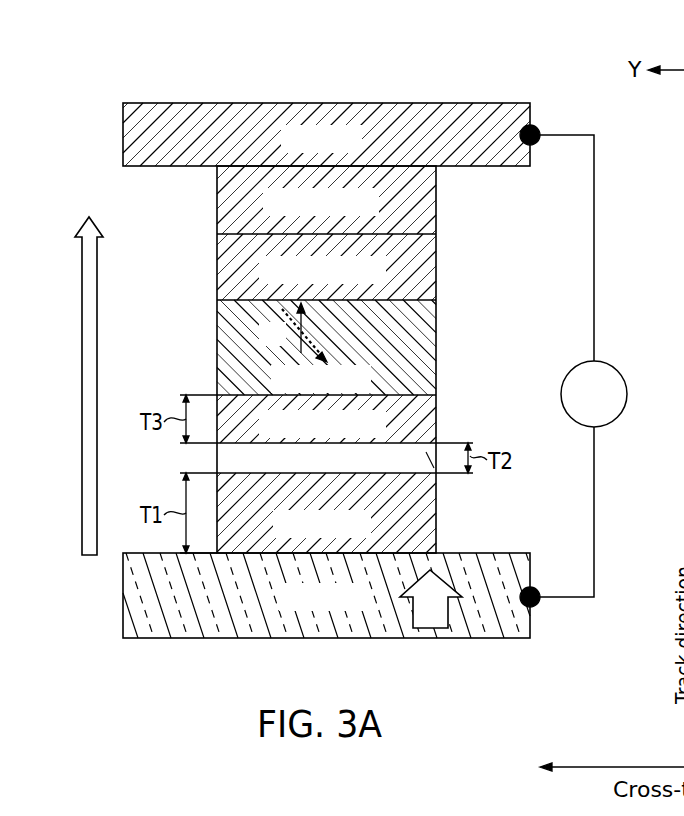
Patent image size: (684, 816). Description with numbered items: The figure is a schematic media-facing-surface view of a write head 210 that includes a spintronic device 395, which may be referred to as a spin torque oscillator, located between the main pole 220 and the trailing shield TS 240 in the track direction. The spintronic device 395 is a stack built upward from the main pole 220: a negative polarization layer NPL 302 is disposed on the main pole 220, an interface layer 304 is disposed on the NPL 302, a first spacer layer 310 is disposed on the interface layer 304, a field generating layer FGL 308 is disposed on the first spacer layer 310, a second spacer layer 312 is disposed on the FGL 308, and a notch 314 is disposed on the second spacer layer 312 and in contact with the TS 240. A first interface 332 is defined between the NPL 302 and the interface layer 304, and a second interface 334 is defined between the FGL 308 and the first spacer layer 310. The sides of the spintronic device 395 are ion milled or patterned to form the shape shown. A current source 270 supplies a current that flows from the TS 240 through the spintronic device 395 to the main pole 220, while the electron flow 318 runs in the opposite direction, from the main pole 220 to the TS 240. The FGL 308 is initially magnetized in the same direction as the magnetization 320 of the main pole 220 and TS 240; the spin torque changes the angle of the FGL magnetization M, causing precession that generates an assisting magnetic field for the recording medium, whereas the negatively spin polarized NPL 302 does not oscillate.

The write head 210 is at (150, 82).
The trailing shield (TS) 240 is at (358, 150).
The notch 314 is at (375, 213).
The second spacer layer 312 is at (382, 281).
The field generating layer (FGL) 308 is at (367, 390).
The first spacer layer 310 is at (382, 435).
The second interface 334 is at (412, 396).
The interface layer 304 is at (418, 471).
The first interface 332 is at (400, 476).
The negative polarization layer (NPL) 302 is at (367, 535).
The main pole 220 is at (362, 608).
The magnetization 320 is at (435, 630).
The electron flow 318 is at (76, 386).
The spintronic device 395 is at (445, 372).
The current source 270 is at (604, 358).